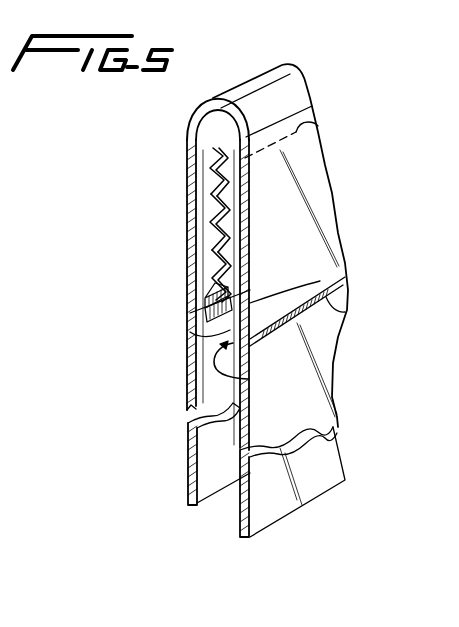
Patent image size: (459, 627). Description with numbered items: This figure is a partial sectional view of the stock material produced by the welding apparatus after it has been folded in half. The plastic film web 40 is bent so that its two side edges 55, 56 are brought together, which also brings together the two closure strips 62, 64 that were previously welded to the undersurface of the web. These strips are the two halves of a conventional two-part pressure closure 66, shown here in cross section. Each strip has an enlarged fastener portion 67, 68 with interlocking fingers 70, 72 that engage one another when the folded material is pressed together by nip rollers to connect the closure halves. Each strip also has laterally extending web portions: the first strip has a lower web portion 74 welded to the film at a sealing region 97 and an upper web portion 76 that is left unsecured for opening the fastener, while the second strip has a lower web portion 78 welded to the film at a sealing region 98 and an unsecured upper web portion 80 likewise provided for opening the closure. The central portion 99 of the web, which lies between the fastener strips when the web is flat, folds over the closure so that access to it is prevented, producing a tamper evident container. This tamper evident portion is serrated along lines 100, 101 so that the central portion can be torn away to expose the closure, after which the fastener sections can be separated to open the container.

The film web 40 is at (327, 464).
The side edge of the film 55 is at (208, 506).
The side edge of the film 56 is at (294, 508).
The closure strip 62 is at (205, 303).
The closure strip 64 is at (250, 378).
The closure 66 is at (232, 197).
The enlarged fastener portion 67 is at (228, 223).
The enlarged fastener portion 68 is at (248, 244).
The interlocking finger 70 is at (232, 198).
The interlocking finger 72 is at (232, 222).
The lower web portion 74 is at (205, 295).
The upper web portion 76 is at (228, 173).
The lower web portion 78 is at (320, 281).
The upper web portion 80 is at (232, 171).
The sealing region 97 is at (212, 344).
The sealing region 98 is at (345, 311).
The central portion of the web 99 is at (207, 98).
The serration line 100 is at (218, 133).
The serration line 101 is at (320, 124).